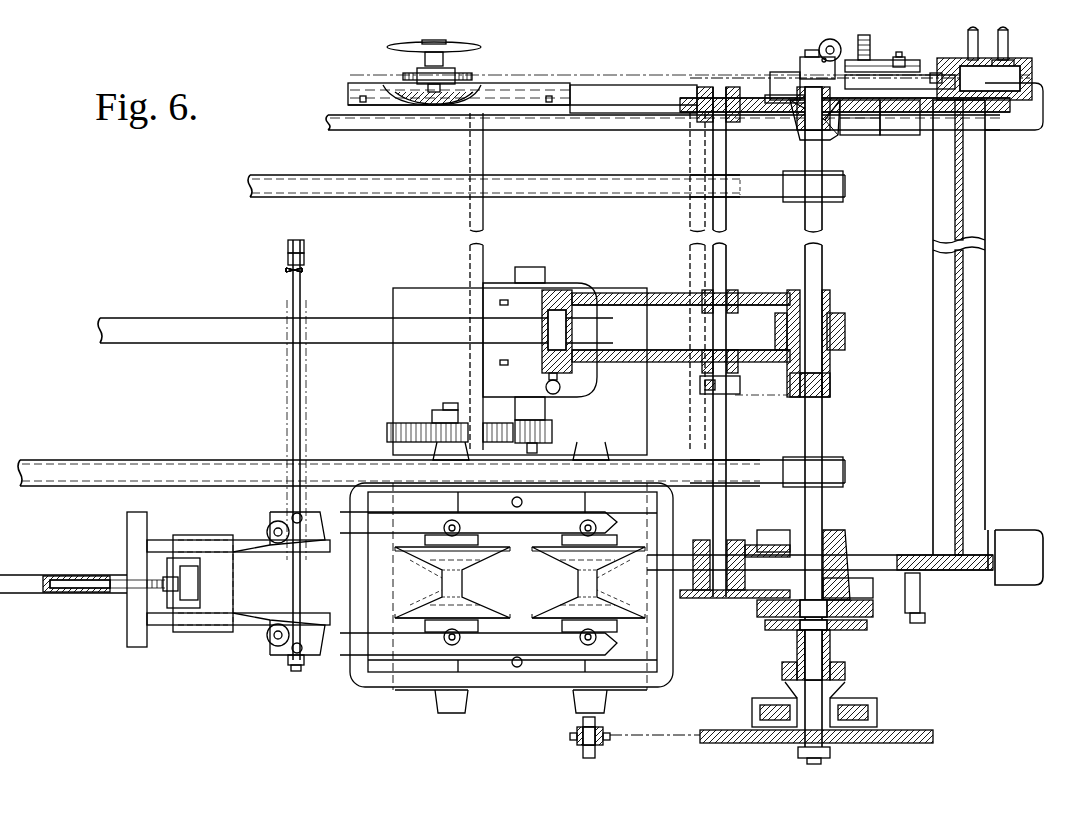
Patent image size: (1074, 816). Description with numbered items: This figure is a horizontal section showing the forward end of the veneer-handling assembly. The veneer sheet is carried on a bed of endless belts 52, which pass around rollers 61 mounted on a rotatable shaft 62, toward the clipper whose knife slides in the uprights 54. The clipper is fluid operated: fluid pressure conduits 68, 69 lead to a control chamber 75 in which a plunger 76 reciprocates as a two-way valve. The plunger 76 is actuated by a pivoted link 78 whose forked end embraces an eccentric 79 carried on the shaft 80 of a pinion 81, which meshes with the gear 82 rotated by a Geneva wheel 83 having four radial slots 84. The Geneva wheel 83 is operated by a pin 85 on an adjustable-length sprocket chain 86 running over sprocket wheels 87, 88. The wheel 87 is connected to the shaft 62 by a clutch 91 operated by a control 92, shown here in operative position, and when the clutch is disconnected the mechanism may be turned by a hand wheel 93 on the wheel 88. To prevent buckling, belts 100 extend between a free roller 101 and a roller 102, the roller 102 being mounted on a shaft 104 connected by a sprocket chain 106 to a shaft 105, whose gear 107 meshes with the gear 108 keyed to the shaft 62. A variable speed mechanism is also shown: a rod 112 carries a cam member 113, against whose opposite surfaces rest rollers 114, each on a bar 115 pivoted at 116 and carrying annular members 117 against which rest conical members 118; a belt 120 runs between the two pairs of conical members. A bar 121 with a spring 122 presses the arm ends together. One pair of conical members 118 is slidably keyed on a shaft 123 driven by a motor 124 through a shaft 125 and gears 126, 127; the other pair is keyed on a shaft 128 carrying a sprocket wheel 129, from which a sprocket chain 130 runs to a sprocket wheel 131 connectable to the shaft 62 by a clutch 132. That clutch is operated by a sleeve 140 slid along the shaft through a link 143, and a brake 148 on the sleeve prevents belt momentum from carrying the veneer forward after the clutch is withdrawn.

The endless belts 52 is at (313, 186).
The uprights 54 is at (990, 127).
The rollers 61 is at (835, 200).
The rotatable shaft 62 is at (825, 430).
The fluid pressure conduit 68 is at (1006, 34).
The fluid pressure conduit 69 is at (1010, 56).
The control chamber 75 is at (1030, 70).
The plunger 76 is at (980, 30).
The pivoted link 78 is at (925, 75).
The eccentric 79 is at (940, 74).
The shaft 80 is at (907, 65).
The pinion 81 is at (885, 60).
The gear 82 is at (868, 50).
The Geneva wheel 83 is at (858, 110).
The radial slots 84 is at (895, 112).
The pin 85 is at (810, 118).
The sprocket chain 86 is at (740, 76).
The sprocket wheel 87 is at (787, 80).
The sprocket wheel 88 is at (455, 78).
The clutch 91 is at (810, 59).
The control 92 is at (833, 42).
The hand wheel 93 is at (440, 44).
The belts 100 is at (492, 335).
The free roller 101 is at (583, 320).
The roller 102 is at (830, 312).
The shaft 104 is at (825, 380).
The shaft 105 is at (725, 440).
The sprocket chain 106 is at (752, 400).
The gear 107 is at (685, 595).
The gear 108 is at (845, 570).
The rod 112 is at (22, 578).
The cam member 113 is at (228, 579).
The rollers 114 is at (271, 526).
The bar 115 is at (327, 522).
The pivot 116 is at (523, 502).
The annular members 117 is at (580, 526).
The conical member 118 is at (470, 550).
The belt 120 is at (522, 582).
The bar 121 is at (300, 412).
The spring 122 is at (302, 292).
The shaft 123 is at (450, 670).
The motor 124 is at (577, 388).
The shaft 125 is at (540, 454).
The gear 126 is at (555, 428).
The gear 127 is at (410, 423).
The shaft 128 is at (595, 735).
The sprocket wheel 129 is at (575, 738).
The sprocket chain 130 is at (672, 738).
The sprocket wheel 131 is at (712, 745).
The clutch 132 is at (880, 705).
The sleeve 140 is at (832, 650).
The link 143 is at (848, 675).
The brake 148 is at (785, 630).